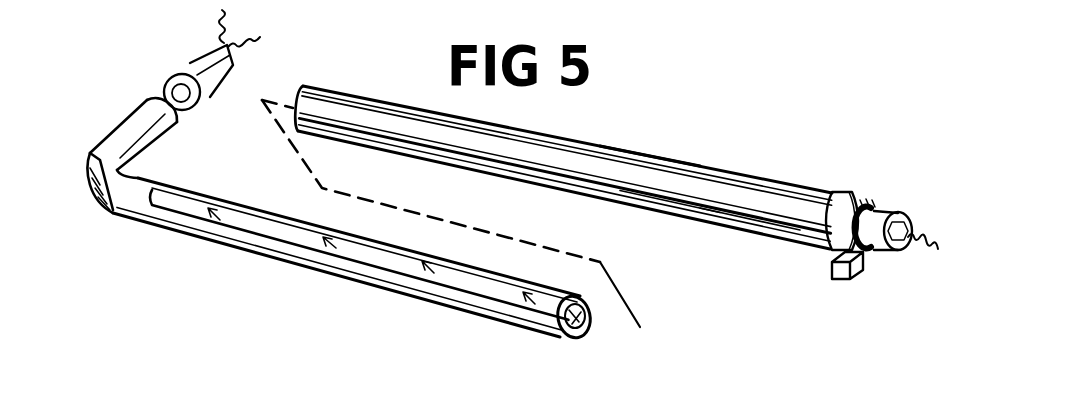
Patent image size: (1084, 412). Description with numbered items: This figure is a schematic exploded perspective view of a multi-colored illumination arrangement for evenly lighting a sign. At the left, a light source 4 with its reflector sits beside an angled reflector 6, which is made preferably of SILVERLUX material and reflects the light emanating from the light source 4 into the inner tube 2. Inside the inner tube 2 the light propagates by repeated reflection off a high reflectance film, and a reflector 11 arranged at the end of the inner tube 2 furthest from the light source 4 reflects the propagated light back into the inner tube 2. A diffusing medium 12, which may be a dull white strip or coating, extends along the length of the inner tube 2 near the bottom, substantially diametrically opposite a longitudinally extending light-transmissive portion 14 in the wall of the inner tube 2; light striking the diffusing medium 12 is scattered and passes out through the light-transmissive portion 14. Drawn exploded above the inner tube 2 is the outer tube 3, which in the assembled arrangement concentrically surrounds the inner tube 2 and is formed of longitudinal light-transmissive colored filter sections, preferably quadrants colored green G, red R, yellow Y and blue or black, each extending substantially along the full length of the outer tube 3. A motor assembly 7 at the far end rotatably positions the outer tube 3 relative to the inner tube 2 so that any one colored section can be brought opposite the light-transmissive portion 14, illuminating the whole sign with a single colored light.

The inner tube 2 is at (395, 283).
The outer tube 3 is at (597, 170).
The light source 4 is at (175, 72).
The reflector 6 is at (104, 209).
The motor assembly 7 is at (883, 205).
The reflector 11 is at (596, 306).
The diffusing medium 12 is at (585, 326).
The light-transmissive portion 14 is at (287, 230).
The red quadrant R is at (668, 162).
The green quadrant G is at (672, 210).
The yellow quadrant Y is at (757, 200).